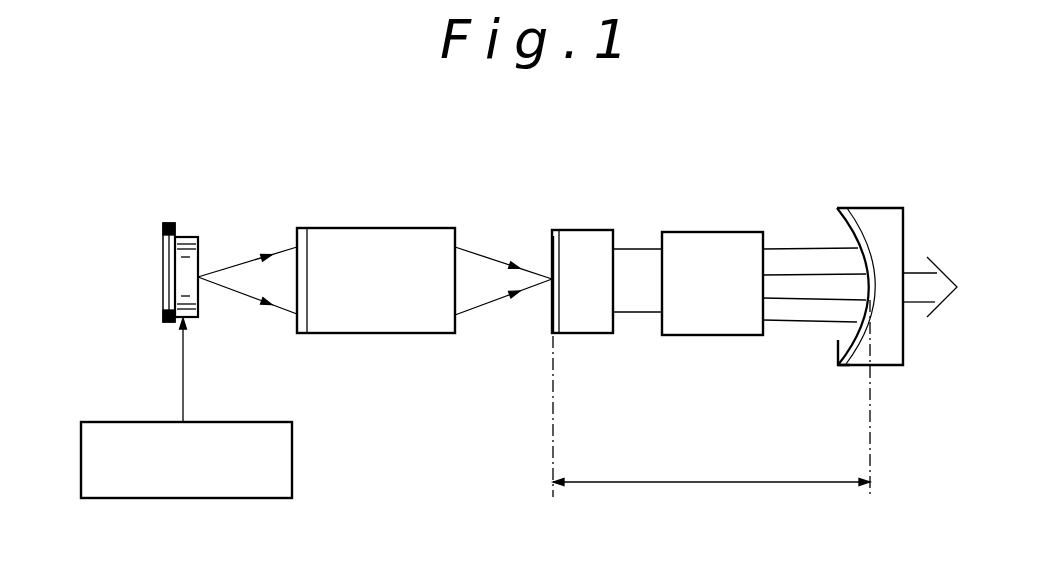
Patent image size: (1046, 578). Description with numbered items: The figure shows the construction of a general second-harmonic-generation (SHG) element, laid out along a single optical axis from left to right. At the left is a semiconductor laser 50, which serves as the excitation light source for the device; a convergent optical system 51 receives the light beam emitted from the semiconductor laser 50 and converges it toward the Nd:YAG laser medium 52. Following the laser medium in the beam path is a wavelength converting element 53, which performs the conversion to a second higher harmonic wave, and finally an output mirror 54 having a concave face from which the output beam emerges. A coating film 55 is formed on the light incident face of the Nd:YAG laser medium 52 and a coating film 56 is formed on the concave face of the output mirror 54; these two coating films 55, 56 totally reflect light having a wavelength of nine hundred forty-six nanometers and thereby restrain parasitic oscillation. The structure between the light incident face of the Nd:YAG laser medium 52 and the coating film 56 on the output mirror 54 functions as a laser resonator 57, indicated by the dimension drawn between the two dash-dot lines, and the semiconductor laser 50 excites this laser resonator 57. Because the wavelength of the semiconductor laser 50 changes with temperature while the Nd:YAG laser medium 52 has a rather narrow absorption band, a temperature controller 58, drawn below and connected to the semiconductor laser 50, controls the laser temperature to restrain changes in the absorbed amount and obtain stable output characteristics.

The semiconductor laser 50 is at (183, 236).
The convergent optical system 51 is at (406, 228).
The Nd:YAG laser medium 52 is at (590, 230).
The wavelength converting element 53 is at (738, 232).
The output mirror 54 is at (892, 208).
The coating film 55 is at (556, 336).
The coating film 56 is at (838, 366).
The laser resonator 57 is at (711, 398).
The temperature controller 58 is at (243, 422).